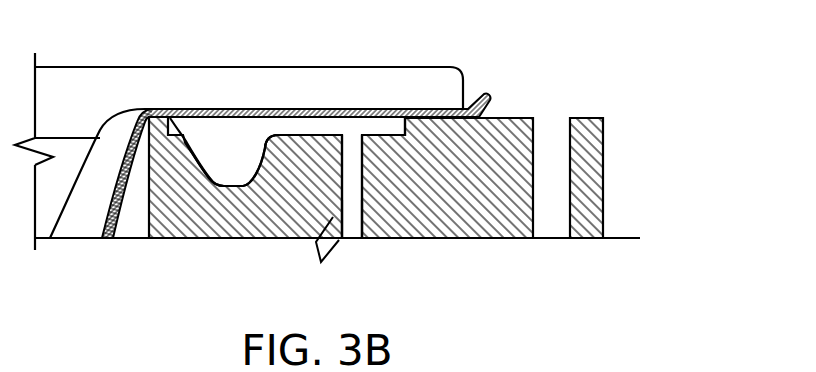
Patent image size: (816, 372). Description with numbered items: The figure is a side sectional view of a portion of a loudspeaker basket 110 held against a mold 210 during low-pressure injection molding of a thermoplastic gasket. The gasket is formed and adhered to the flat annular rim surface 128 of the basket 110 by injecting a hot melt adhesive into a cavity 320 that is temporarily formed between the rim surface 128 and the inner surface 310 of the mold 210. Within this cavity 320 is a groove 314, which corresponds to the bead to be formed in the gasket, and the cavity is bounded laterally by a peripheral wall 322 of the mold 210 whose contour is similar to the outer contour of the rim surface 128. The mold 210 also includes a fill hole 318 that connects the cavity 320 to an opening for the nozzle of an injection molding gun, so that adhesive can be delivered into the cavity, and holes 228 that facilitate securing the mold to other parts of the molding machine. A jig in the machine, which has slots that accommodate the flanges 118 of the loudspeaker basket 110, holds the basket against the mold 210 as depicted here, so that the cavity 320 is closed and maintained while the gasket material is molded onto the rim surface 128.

The basket 110 is at (447, 56).
The flanges 118 is at (127, 67).
The rim surface 128 is at (352, 126).
The mold 210 is at (428, 191).
The holes 228 is at (551, 124).
The inner surface 310 is at (284, 134).
The groove 314 is at (170, 117).
The fill hole 318 is at (353, 231).
The cavity 320 is at (218, 146).
The peripheral wall 322 is at (401, 126).